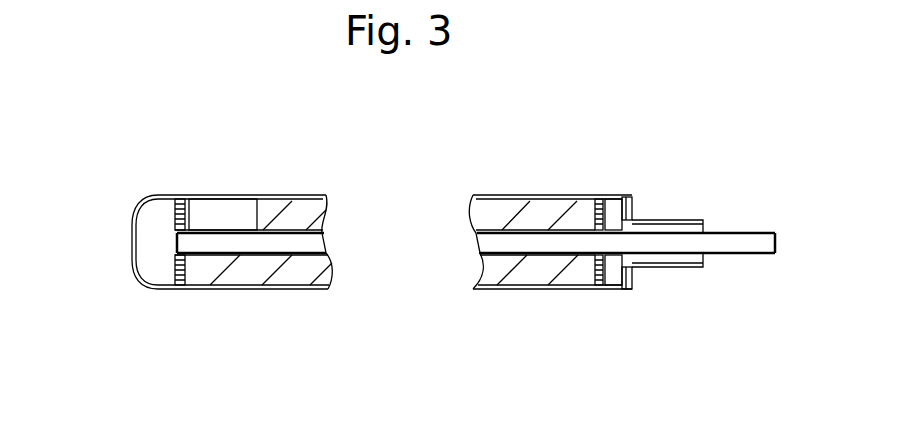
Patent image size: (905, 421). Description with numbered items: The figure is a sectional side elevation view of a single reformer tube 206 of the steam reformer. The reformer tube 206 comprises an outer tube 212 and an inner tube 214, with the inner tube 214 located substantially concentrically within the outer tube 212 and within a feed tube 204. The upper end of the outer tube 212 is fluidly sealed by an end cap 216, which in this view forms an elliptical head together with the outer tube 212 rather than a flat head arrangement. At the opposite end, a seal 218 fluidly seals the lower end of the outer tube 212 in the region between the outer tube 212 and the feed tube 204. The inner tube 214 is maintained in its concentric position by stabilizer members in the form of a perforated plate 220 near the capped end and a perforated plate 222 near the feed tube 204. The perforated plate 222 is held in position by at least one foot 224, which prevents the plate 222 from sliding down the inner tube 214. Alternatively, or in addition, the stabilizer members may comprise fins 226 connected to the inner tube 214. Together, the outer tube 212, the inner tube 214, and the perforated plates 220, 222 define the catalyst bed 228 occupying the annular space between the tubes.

The feed tube 204 is at (672, 219).
The reformer tube 206 is at (436, 137).
The outer tube 212 is at (272, 280).
The inner tube 214 is at (330, 248).
The end cap 216 is at (132, 242).
The seal 218 is at (632, 286).
The perforated plate 220 is at (175, 263).
The perforated plate 222 is at (598, 270).
The foot 224 is at (612, 208).
The fins 226 is at (235, 212).
The catalyst bed 228 is at (497, 268).